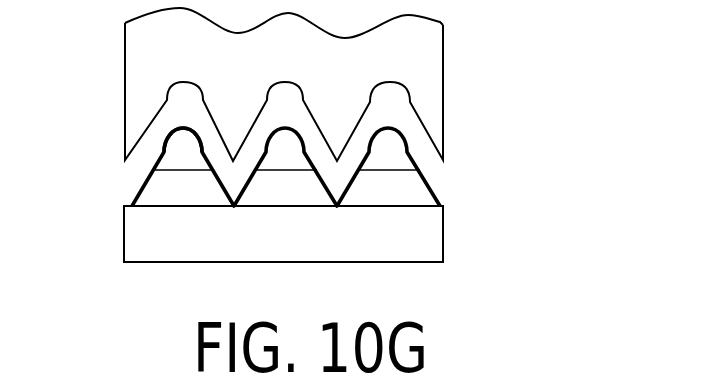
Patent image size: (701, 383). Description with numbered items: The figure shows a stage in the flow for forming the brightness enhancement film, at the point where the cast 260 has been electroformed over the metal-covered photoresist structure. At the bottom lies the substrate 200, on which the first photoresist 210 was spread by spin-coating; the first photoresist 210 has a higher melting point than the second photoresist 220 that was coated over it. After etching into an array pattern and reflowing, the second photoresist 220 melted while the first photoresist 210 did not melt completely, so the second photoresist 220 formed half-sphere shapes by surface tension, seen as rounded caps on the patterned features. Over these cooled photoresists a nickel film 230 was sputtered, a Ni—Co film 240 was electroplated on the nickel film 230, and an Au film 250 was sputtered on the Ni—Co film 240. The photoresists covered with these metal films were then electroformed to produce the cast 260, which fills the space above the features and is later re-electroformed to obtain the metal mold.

The substrate 200 is at (398, 238).
The first photoresist 210 is at (367, 187).
The second photoresist 220 is at (385, 140).
The nickel film 230 is at (183, 128).
The Ni—Co film 240 is at (385, 128).
The Au film 250 is at (185, 128).
The cast 260 is at (192, 53).